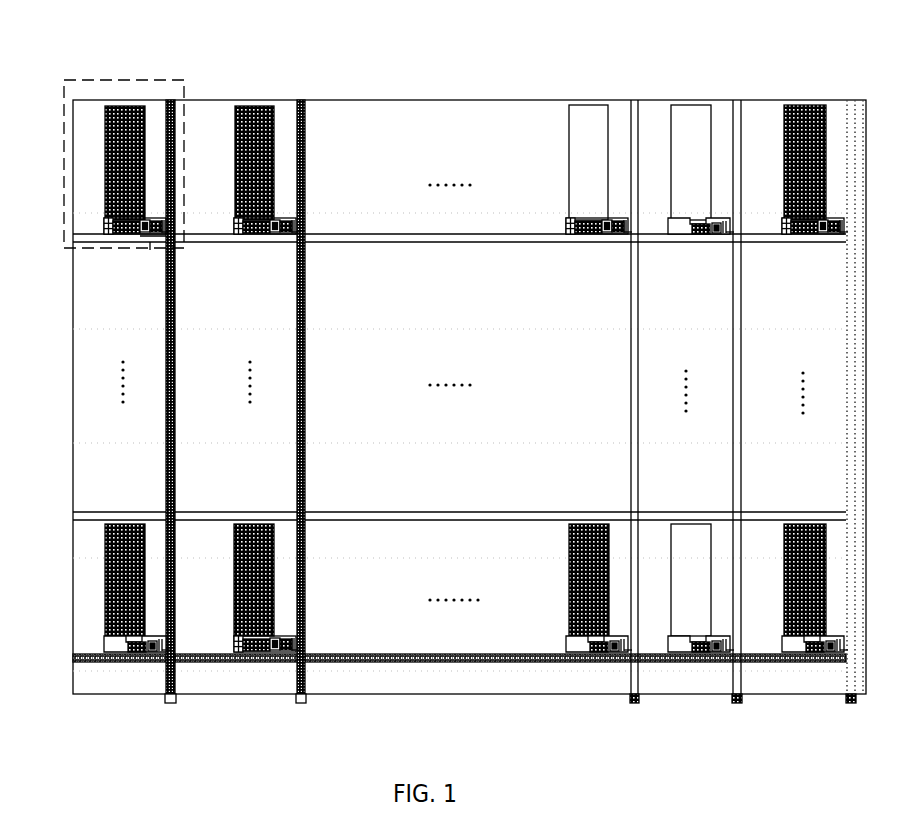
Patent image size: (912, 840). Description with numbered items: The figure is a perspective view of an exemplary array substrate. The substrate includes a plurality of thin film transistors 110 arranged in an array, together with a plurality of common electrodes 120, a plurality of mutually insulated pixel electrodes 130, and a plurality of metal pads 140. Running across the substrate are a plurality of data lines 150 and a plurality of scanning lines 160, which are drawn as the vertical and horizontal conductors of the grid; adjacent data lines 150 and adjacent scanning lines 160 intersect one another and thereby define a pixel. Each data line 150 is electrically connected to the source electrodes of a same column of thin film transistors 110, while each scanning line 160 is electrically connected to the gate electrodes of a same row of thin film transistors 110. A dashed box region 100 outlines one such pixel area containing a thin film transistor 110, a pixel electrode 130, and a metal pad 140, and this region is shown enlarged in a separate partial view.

The dashed box region 100 is at (125, 81).
The thin film transistor 110 is at (152, 238).
The common electrode 120 is at (152, 108).
The pixel electrode 130 is at (113, 128).
The metal pad 140 is at (107, 230).
The data line 150 is at (302, 100).
The scanning line 160 is at (346, 238).